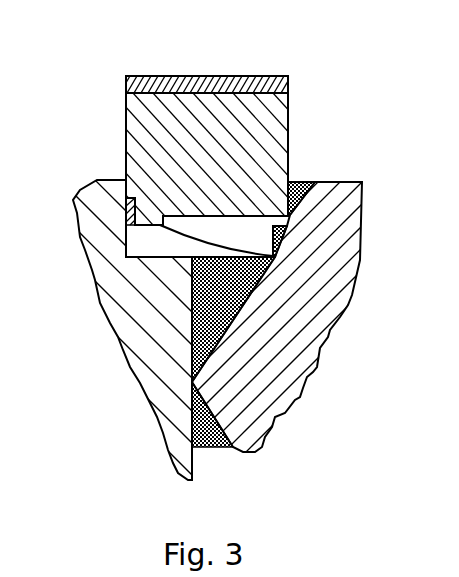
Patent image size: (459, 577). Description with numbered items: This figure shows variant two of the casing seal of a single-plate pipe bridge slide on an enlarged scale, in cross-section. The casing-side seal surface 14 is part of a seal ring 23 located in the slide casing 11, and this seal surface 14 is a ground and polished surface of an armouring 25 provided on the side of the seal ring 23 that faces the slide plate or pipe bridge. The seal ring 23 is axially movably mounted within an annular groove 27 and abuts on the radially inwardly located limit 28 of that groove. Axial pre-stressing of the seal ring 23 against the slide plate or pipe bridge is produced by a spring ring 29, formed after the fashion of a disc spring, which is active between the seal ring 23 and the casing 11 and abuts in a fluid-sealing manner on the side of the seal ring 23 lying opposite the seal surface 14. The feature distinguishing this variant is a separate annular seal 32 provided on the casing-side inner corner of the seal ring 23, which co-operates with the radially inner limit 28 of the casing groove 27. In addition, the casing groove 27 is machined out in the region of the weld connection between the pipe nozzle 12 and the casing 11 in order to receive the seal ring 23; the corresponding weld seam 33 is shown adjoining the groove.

The slide casing 11 is at (312, 332).
The pipe nozzle 12 is at (140, 356).
The seal surface 14 is at (227, 76).
The seal ring 23 is at (258, 133).
The armouring 25 is at (162, 77).
The annular groove 27 is at (263, 237).
The radially inner limit 28 is at (136, 246).
The spring ring 29 is at (200, 238).
The annular seal 32 is at (123, 202).
The weld seam 33 is at (226, 326).